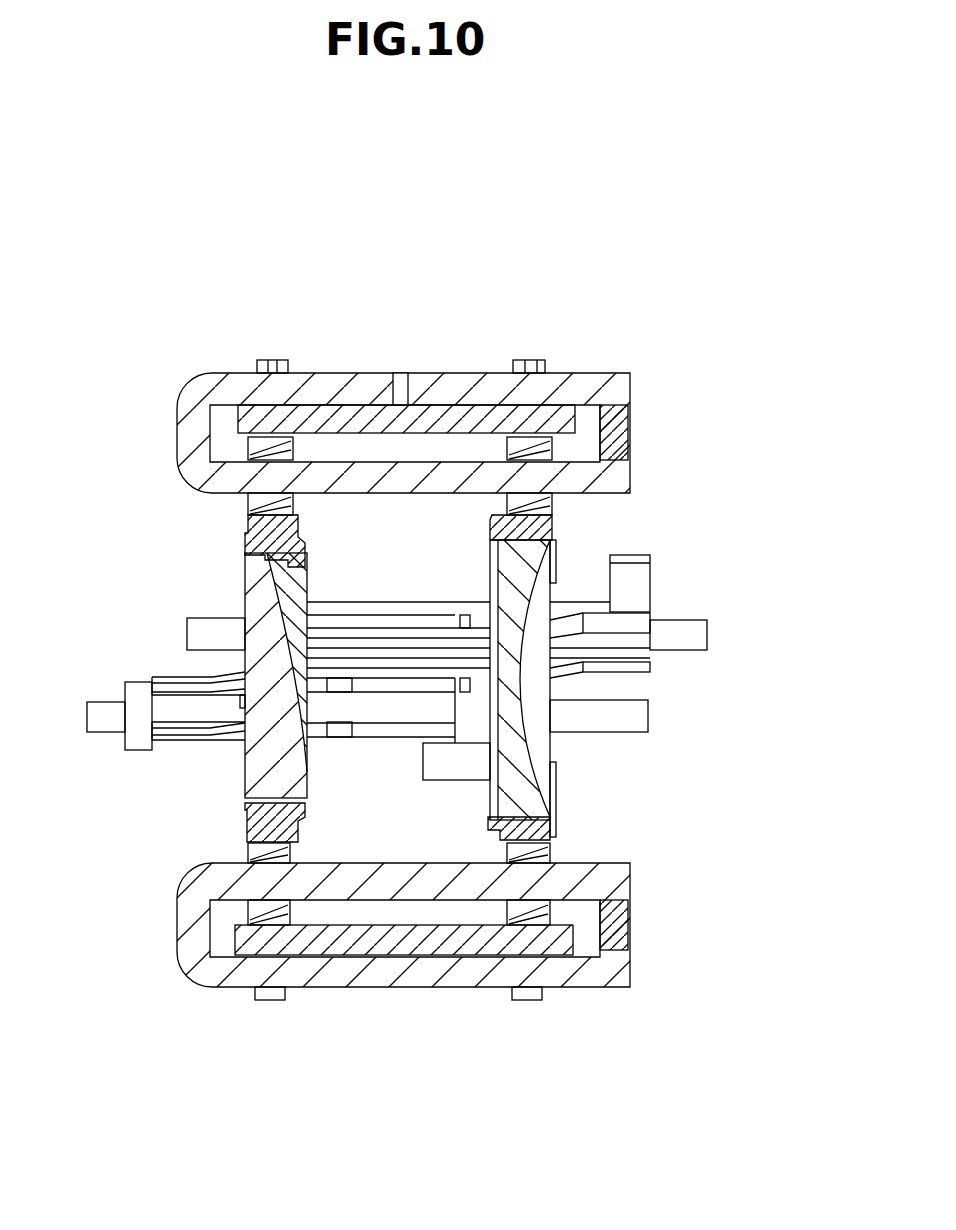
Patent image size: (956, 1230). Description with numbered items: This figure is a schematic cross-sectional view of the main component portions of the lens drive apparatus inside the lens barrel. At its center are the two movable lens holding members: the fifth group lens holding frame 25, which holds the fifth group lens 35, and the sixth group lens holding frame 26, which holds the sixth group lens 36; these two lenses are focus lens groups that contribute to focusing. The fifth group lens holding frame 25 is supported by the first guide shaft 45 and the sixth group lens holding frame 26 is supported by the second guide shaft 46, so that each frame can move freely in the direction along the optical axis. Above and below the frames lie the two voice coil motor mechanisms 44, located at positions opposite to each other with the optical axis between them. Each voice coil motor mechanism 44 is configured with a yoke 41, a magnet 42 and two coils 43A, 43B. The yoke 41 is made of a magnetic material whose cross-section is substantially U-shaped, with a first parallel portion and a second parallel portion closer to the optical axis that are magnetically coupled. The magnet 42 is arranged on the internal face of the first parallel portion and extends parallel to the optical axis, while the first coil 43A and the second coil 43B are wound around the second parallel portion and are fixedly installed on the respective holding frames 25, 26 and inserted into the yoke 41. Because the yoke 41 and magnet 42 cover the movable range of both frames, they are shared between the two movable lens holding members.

The fifth group lens holding frame 25 is at (344, 807).
The sixth group lens holding frame 26 is at (553, 801).
The fifth group lens 35 is at (304, 756).
The sixth group lens 36 is at (528, 758).
The yoke 41 is at (447, 372).
The magnet 42 is at (488, 372).
The first coil 43A is at (253, 848).
The second coil 43B is at (523, 513).
The voice coil motor mechanism 44 is at (393, 673).
The first guide shaft 45 is at (102, 712).
The second guide shaft 46 is at (680, 625).